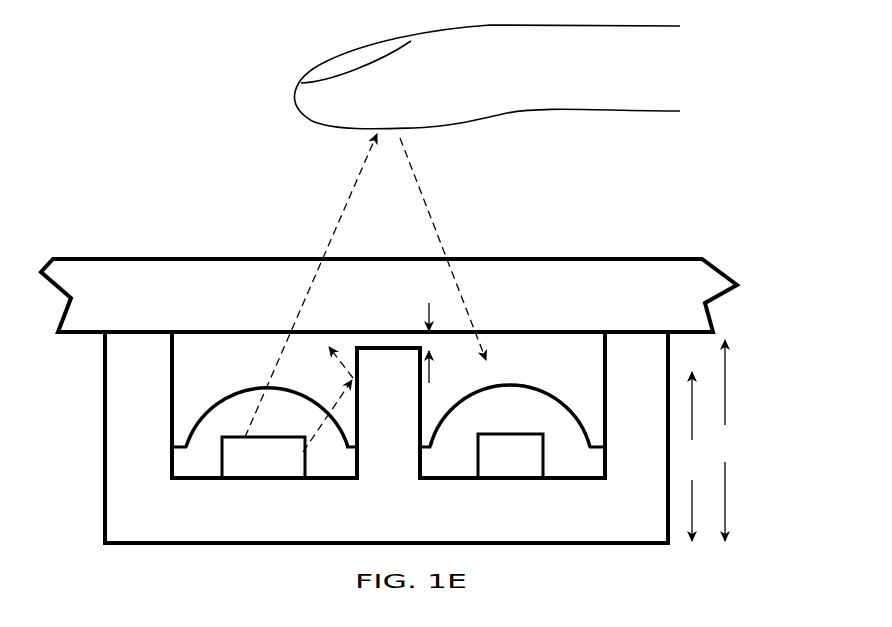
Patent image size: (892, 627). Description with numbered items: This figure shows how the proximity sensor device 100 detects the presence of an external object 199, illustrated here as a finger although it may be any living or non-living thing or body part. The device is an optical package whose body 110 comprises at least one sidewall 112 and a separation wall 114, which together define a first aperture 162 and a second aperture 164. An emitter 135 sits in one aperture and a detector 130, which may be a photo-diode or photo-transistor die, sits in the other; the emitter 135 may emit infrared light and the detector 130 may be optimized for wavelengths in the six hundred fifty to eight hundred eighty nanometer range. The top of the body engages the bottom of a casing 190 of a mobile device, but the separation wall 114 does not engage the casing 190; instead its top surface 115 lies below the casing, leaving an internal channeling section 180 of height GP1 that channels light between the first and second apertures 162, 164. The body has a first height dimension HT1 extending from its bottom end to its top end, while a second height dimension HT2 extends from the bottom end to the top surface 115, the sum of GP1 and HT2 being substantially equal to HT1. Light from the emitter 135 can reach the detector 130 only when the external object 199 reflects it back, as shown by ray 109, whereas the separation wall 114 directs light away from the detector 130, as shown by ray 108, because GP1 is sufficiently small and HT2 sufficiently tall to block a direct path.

The proximity sensor device 100 is at (198, 220).
The ray 108 is at (337, 400).
The ray 109 is at (425, 183).
The body 110 is at (386, 519).
The sidewall 112 is at (386, 438).
The separation wall 114 is at (388, 413).
The top surface 115 is at (367, 353).
The detector 130 is at (510, 456).
The emitter 135 is at (263, 457).
The first aperture 162 is at (267, 400).
The second aperture 164 is at (510, 397).
The internal channeling section 180 is at (368, 340).
The casing 190 is at (389, 295).
The external object 199 is at (487, 77).
The height dimension GP1 is at (450, 343).
The first height dimension HT1 is at (727, 440).
The second height dimension HT2 is at (693, 456).